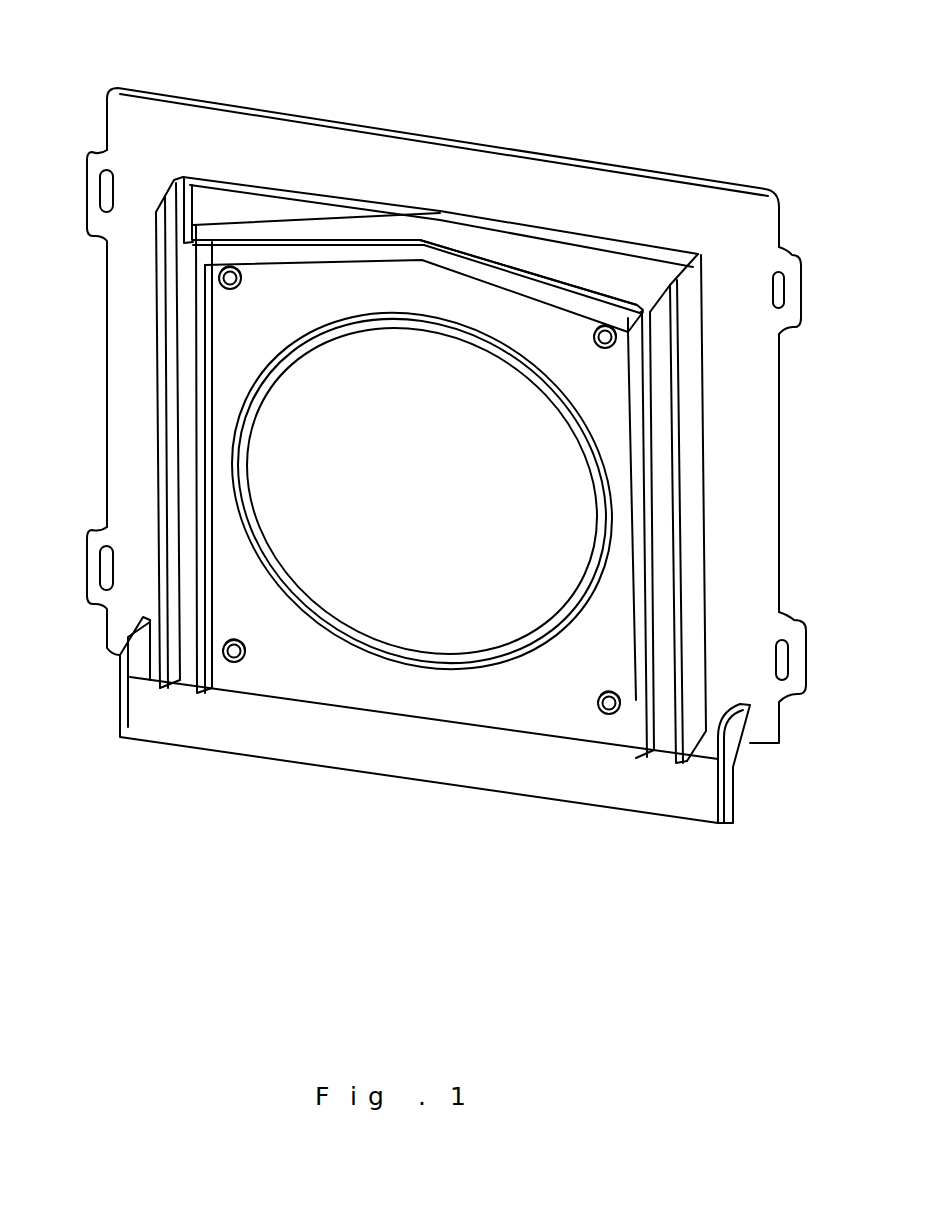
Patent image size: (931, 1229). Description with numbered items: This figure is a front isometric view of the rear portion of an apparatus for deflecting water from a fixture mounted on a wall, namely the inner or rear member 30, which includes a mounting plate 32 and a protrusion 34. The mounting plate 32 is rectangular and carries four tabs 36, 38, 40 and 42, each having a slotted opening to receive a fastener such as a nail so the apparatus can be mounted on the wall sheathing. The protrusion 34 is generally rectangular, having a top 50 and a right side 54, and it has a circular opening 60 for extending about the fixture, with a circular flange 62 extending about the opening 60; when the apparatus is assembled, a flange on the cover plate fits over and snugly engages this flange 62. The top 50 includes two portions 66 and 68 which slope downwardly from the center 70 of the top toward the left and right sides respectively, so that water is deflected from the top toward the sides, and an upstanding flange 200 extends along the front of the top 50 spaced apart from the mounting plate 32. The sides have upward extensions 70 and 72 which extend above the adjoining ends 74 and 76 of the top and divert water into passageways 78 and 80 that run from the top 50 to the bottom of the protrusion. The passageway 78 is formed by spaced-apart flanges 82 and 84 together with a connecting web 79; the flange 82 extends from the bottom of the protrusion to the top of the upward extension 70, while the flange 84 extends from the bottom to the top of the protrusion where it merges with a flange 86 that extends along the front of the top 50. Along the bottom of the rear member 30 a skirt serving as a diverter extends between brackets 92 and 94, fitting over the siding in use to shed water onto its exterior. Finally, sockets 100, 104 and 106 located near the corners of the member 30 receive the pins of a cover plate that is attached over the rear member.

The rear member 30 is at (340, 60).
The mounting plate 32 is at (142, 112).
The protrusion 34 is at (240, 332).
The tab 36 is at (104, 182).
The tab 38 is at (104, 566).
The tab 40 is at (776, 290).
The tab 42 is at (781, 658).
The top 50 is at (437, 318).
The right side 54 is at (687, 347).
The opening 60 is at (300, 417).
The circular flange 62 is at (486, 254).
The sloping portion 66 is at (388, 232).
The sloping portion 68 is at (605, 283).
The upward extension 70 is at (657, 297).
The upward extension 72 is at (174, 205).
The adjoining end of the top 74 is at (616, 324).
The adjoining end of the top 76 is at (196, 222).
The passageway 78 is at (677, 407).
The connecting web 79 is at (667, 587).
The passageway 80 is at (187, 287).
The flange 82 is at (677, 510).
The flange 84 is at (643, 570).
The flange 86 is at (528, 262).
The bracket 92 is at (147, 658).
The bracket 94 is at (737, 742).
The socket 100 is at (250, 270).
The socket 104 is at (234, 665).
The socket 106 is at (610, 714).
The upstanding flange 200 is at (498, 280).